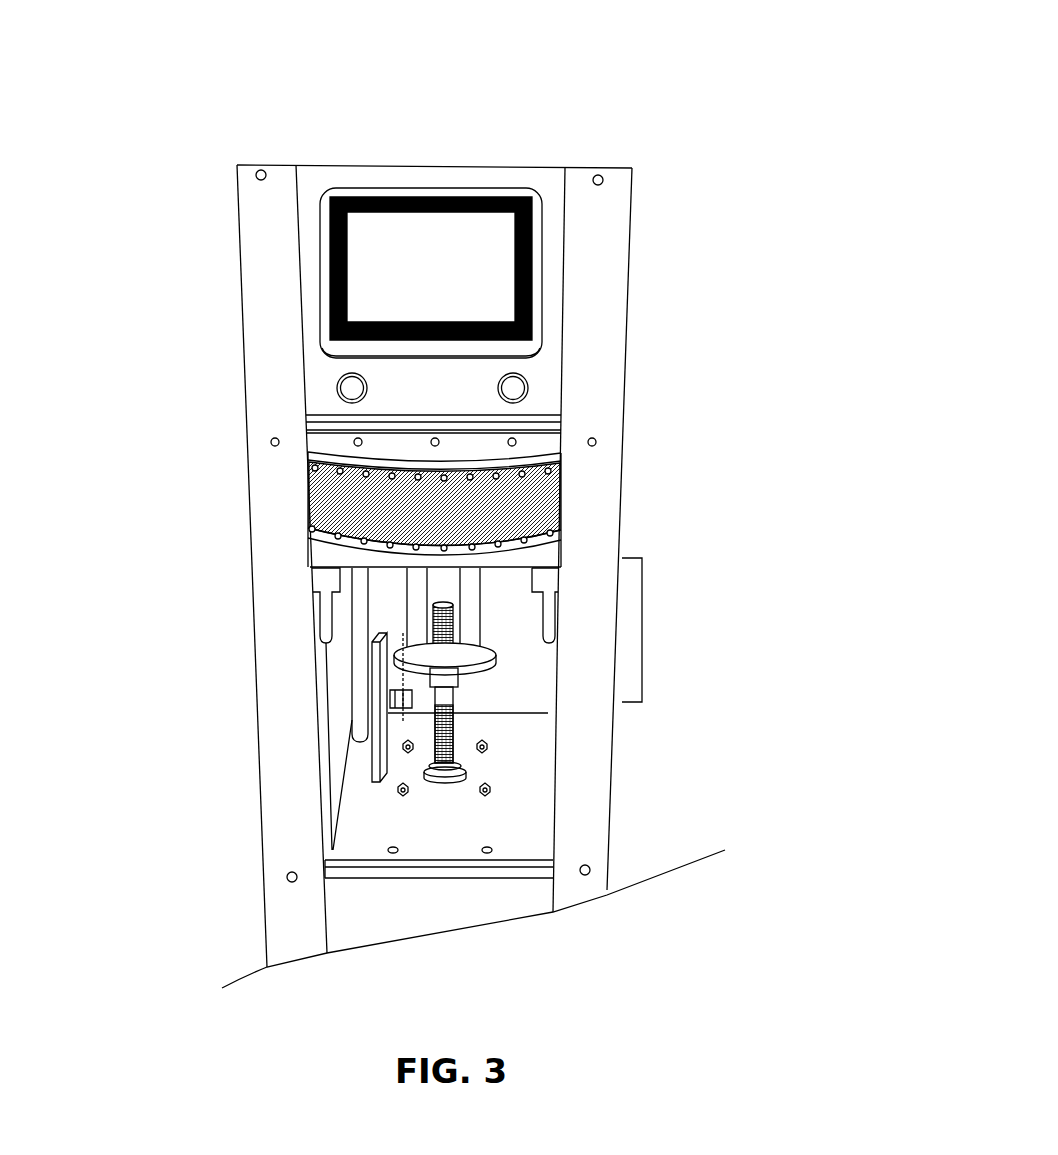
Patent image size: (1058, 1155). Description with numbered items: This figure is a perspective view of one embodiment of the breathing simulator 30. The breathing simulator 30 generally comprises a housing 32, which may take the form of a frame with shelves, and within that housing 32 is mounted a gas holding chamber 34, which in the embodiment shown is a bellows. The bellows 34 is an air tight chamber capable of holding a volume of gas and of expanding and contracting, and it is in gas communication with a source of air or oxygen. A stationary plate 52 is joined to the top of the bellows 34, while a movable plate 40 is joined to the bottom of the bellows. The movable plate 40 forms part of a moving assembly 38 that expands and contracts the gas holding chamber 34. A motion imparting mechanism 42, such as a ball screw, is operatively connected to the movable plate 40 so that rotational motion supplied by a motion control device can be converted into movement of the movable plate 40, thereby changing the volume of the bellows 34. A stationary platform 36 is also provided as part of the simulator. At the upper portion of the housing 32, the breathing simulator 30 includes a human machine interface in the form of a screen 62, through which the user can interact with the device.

The breathing simulator 30 is at (589, 110).
The housing 32 is at (595, 267).
The gas holding chamber 34 is at (515, 507).
The stationary platform 36 is at (515, 818).
The moving assembly 38 is at (642, 628).
The movable plate 40 is at (528, 562).
The motion imparting mechanism 42 is at (443, 690).
The stationary plate 52 is at (332, 456).
The screen 62 is at (367, 265).